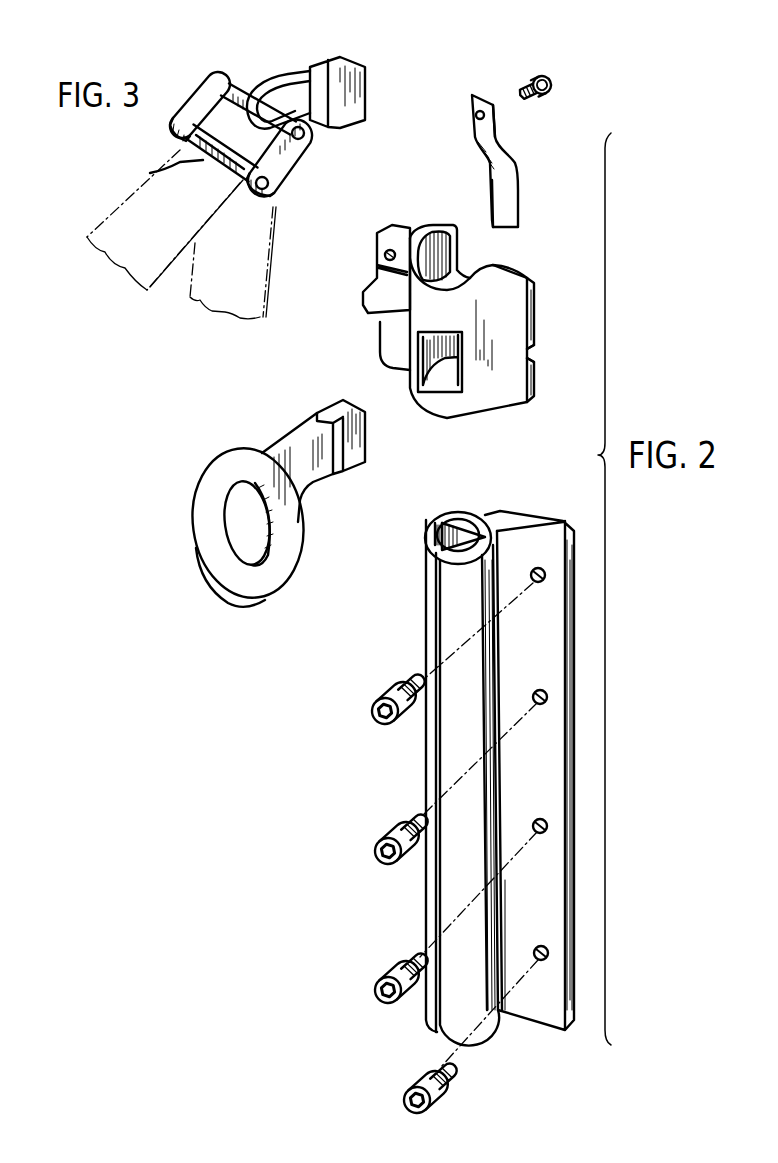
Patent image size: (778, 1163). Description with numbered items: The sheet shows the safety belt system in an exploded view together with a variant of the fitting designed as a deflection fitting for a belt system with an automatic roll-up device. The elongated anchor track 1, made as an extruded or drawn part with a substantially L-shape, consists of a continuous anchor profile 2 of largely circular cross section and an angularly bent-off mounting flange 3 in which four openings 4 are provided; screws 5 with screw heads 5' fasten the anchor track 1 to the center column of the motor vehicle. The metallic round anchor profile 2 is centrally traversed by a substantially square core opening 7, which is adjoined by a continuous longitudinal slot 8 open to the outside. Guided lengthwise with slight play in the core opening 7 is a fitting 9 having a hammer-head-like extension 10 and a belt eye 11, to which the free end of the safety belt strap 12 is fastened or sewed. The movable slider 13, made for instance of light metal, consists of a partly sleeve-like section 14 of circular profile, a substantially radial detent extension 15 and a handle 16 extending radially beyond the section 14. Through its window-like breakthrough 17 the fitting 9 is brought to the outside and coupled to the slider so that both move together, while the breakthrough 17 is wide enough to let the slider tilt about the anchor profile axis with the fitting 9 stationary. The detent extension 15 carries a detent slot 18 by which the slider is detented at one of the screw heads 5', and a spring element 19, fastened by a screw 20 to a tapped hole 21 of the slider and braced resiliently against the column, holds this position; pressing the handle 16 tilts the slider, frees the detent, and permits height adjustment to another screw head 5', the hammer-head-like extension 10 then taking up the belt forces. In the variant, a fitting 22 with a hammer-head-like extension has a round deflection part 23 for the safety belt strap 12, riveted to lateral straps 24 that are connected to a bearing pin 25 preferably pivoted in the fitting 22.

In FIG. 2, the anchor track 1 is at (420, 768).
In FIG. 2, the anchor profile 2 is at (430, 526).
In FIG. 2, the mounting flange 3 is at (540, 545).
In FIG. 2, the openings 4 is at (541, 820).
In FIG. 2, the screws 5 is at (407, 891).
In FIG. 2, the screw heads 5' is at (382, 926).
In FIG. 2, the core opening 7 is at (458, 530).
In FIG. 2, the longitudinal slot 8 is at (432, 612).
In FIG. 2, the fitting 9 is at (290, 440).
In FIG. 2, the hammer-head-like extension 10 is at (353, 470).
In FIG. 2, the belt eye 11 is at (223, 478).
In FIG. 3, the safety belt strap 12 is at (190, 306).
In FIG. 2, the movable slider 13 is at (500, 404).
In FIG. 2, the sleeve-like section 14 is at (425, 232).
In FIG. 2, the detent extension 15 is at (505, 300).
In FIG. 2, the handle 16 is at (375, 288).
In FIG. 2, the window-like breakthrough 17 is at (436, 392).
In FIG. 2, the detent slot 18 is at (533, 353).
In FIG. 2, the spring element 19 is at (510, 182).
In FIG. 2, the screw 20 is at (522, 83).
In FIG. 2, the tapped hole 21 is at (384, 256).
In FIG. 3, the fitting 22 is at (292, 74).
In FIG. 3, the deflection part 23 is at (150, 173).
In FIG. 3, the lateral straps 24 is at (195, 110).
In FIG. 3, the bearing pin 25 is at (236, 80).